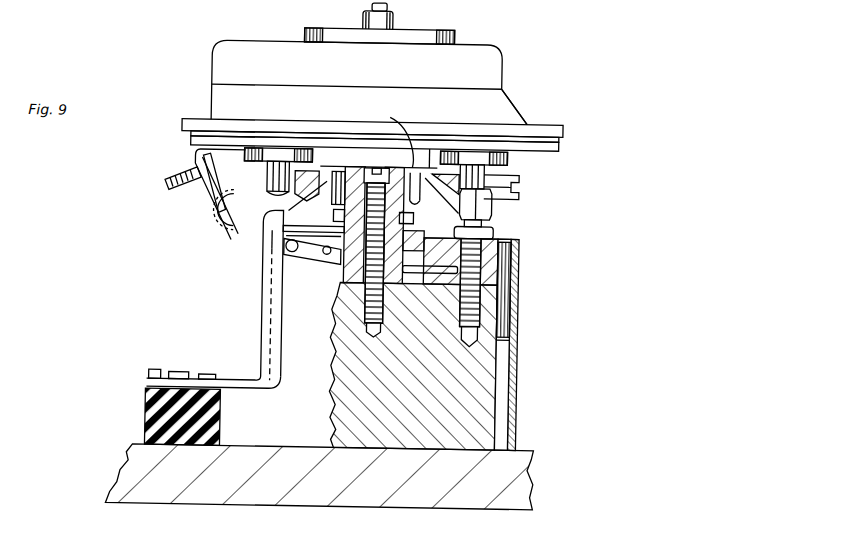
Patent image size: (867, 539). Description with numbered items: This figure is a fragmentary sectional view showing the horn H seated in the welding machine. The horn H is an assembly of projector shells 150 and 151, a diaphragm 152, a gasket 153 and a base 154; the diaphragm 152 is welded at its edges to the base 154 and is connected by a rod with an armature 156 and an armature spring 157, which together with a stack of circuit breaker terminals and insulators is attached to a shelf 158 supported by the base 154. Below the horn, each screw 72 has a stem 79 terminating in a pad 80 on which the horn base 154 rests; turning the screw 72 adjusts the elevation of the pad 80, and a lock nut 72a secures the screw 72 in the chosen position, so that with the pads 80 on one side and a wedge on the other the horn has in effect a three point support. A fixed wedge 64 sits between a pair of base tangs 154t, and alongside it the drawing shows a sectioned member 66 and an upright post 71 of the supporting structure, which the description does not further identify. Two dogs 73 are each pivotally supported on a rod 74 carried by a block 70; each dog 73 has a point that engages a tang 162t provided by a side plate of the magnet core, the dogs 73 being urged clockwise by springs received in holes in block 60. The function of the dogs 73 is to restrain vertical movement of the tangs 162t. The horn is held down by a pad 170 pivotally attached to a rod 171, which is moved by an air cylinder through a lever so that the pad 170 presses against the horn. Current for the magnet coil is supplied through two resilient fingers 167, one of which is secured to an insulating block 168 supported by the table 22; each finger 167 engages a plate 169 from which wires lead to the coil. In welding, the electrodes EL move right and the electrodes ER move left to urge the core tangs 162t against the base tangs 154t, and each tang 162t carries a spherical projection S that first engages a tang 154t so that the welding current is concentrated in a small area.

The table 22 is at (118, 473).
The block 60 is at (519, 317).
The wedge 64 is at (356, 217).
The insulating slab 66 is at (388, 217).
The block 70 is at (512, 238).
The post 71 is at (504, 257).
The screw 72 is at (460, 308).
The lock nut 72a is at (490, 231).
The dog 73 is at (387, 260).
The rod 74 is at (418, 300).
The stem 79 is at (491, 205).
The pad 80 is at (243, 156).
The projector shell 150 is at (500, 50).
The projector shell 151 is at (517, 104).
The diaphragm 152 is at (562, 132).
The gasket 153 is at (560, 138).
The horn base 154 is at (558, 146).
The base tang 154t is at (343, 165).
The armature 156 is at (421, 221).
The armature spring 157 is at (313, 230).
The shelf 158 is at (240, 243).
The core tang 162t is at (318, 167).
The resilient finger 167 is at (260, 318).
The insulating block 168 is at (147, 405).
The plate 169 is at (307, 252).
The pad 170 is at (438, 34).
The rod 171 is at (366, 12).
The spherical projection S is at (379, 142).
The electrodes EL is at (218, 220).
The electrodes ER is at (514, 184).
The horn H is at (541, 63).